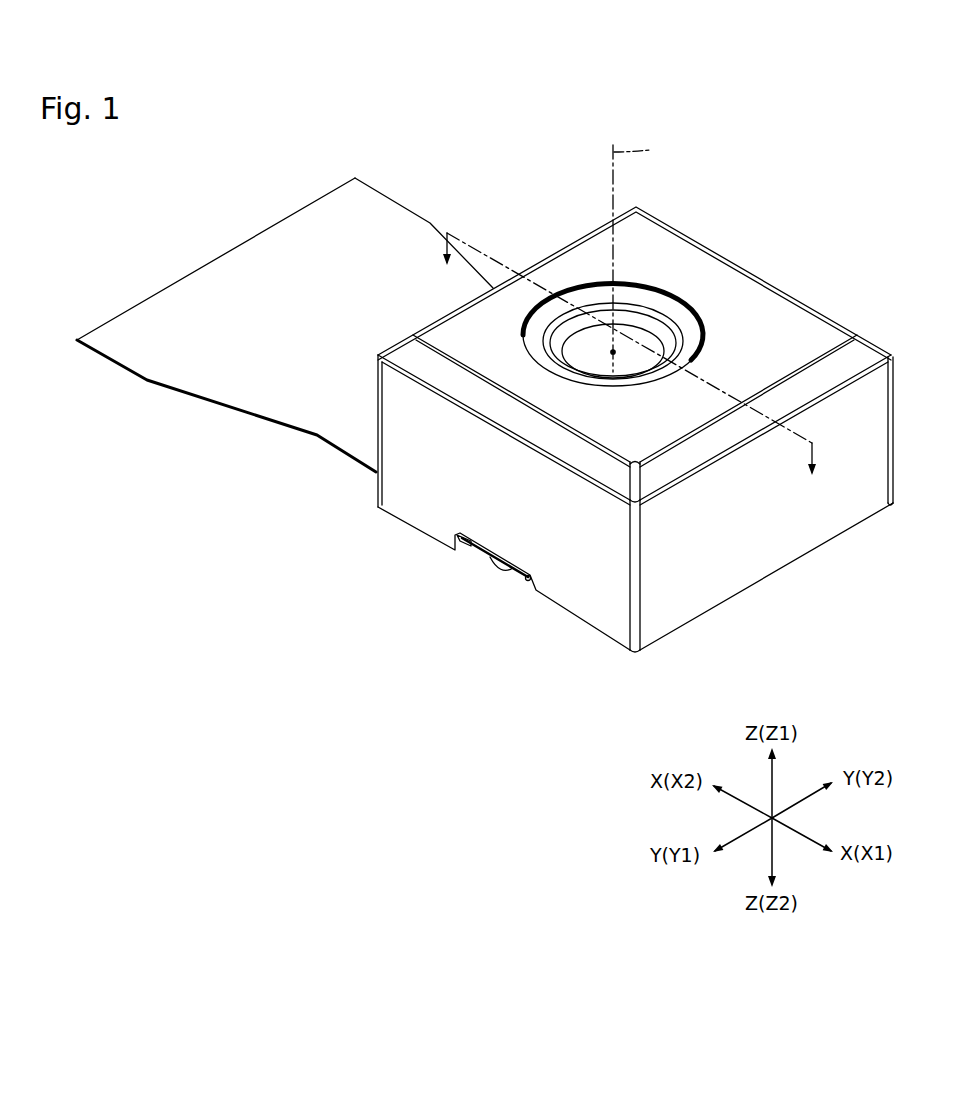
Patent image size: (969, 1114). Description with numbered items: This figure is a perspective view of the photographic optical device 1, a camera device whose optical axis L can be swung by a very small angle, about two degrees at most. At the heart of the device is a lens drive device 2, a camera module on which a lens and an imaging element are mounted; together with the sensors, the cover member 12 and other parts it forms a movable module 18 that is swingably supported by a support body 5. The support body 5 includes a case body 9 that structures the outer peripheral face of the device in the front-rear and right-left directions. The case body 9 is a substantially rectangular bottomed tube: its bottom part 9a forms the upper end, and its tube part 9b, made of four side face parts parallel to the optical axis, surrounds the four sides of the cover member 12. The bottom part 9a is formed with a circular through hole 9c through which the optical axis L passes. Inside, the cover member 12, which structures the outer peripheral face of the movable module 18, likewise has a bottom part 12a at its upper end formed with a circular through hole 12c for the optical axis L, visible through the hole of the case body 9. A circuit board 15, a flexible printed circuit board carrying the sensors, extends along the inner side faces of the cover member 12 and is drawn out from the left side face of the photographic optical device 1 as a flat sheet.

The photographic optical device 1 is at (635, 395).
The lens drive device 2 is at (625, 322).
The movable module 18 is at (613, 311).
The support body 5 is at (635, 429).
The case body 9 is at (635, 429).
The bottom part 9a is at (501, 347).
The tube part 9b is at (707, 554).
The circular through hole 9c is at (664, 288).
The cover member 12 is at (677, 333).
The bottom part 12a is at (677, 333).
The circular through hole 12c is at (662, 315).
The circuit board 15 is at (240, 413).